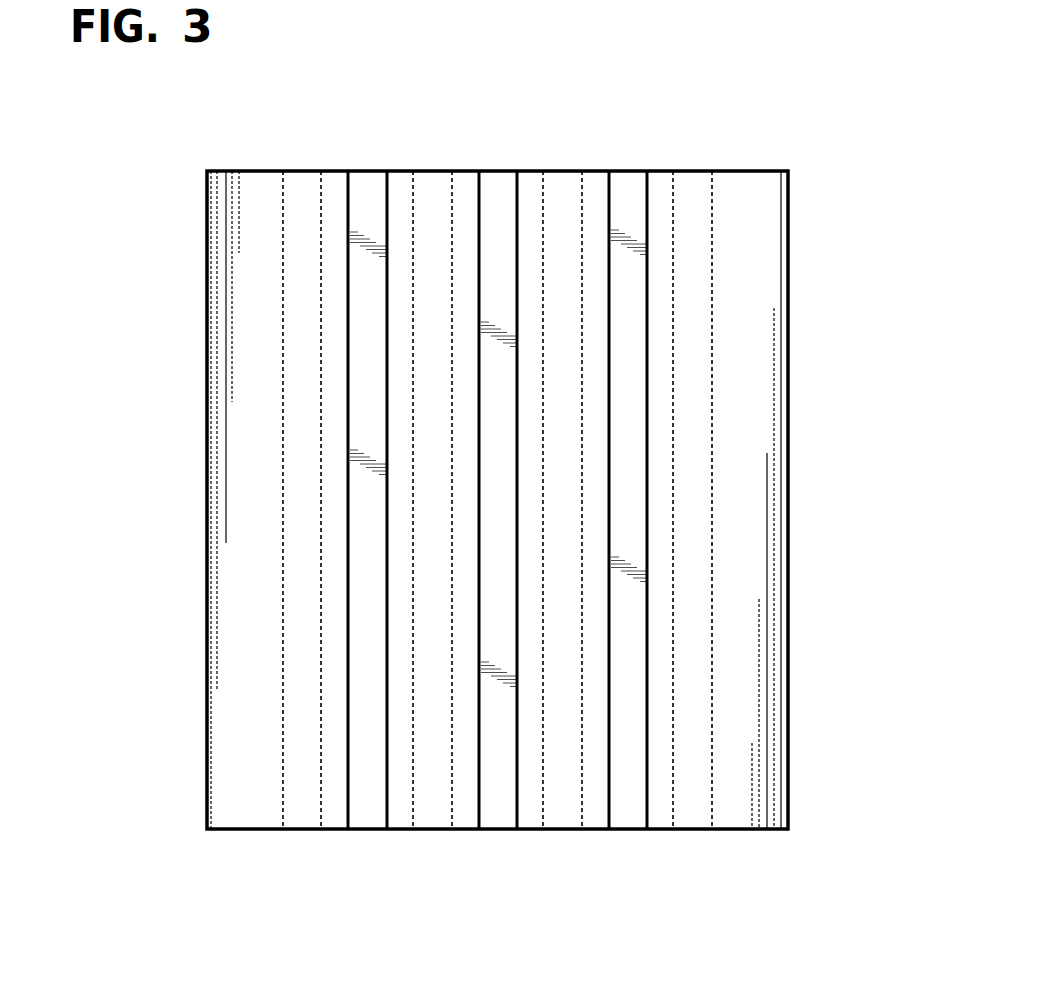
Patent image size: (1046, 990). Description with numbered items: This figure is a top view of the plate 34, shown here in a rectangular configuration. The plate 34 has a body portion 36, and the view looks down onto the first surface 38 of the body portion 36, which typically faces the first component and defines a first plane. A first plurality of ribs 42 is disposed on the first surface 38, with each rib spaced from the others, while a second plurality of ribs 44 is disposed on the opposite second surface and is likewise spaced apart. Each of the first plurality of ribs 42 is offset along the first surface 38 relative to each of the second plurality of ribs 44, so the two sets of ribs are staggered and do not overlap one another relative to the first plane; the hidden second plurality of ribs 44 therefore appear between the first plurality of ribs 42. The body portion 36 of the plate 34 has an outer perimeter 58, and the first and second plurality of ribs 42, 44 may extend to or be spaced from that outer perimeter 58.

The plate 34 is at (818, 792).
The body portion 36 is at (750, 415).
The first surface 38 is at (258, 621).
The first plurality of ribs 42 is at (367, 195).
The second plurality of ribs 44 is at (281, 197).
The outer perimeter 58 is at (800, 337).